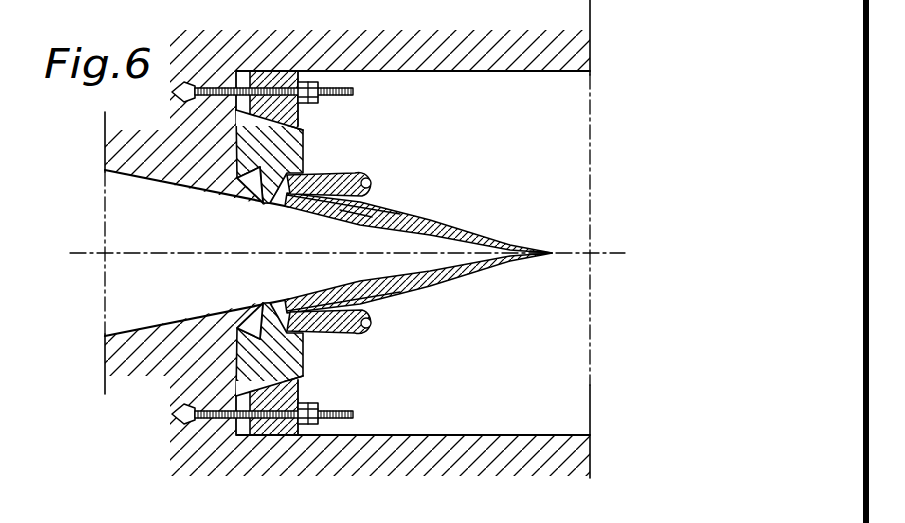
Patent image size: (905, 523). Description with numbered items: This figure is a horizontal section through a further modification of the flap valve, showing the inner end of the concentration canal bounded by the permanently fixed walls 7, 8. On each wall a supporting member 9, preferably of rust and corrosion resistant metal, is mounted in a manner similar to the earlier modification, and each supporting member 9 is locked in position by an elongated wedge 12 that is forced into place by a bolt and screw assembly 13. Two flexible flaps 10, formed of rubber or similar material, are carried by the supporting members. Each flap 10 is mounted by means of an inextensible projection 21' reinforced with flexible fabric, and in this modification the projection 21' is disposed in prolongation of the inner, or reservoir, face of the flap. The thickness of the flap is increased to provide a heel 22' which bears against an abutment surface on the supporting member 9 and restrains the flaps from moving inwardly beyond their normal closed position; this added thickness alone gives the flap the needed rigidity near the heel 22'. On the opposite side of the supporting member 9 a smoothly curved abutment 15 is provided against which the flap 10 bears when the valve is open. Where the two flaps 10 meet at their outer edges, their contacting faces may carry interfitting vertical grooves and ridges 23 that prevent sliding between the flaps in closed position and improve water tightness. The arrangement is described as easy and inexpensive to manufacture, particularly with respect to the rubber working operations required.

The permanently fixed wall 7 is at (158, 183).
The permanently fixed wall 8 is at (160, 322).
The supporting member 9 is at (263, 303).
The flexible flap 10 is at (437, 230).
The elongated wedge 12 is at (279, 80).
The bolt and screw assembly 13 is at (310, 103).
The curved abutment 15 is at (417, 153).
The inextensible projection 21' is at (332, 253).
The heel 22' is at (351, 239).
The vertical grooves and ridges 23 is at (528, 252).